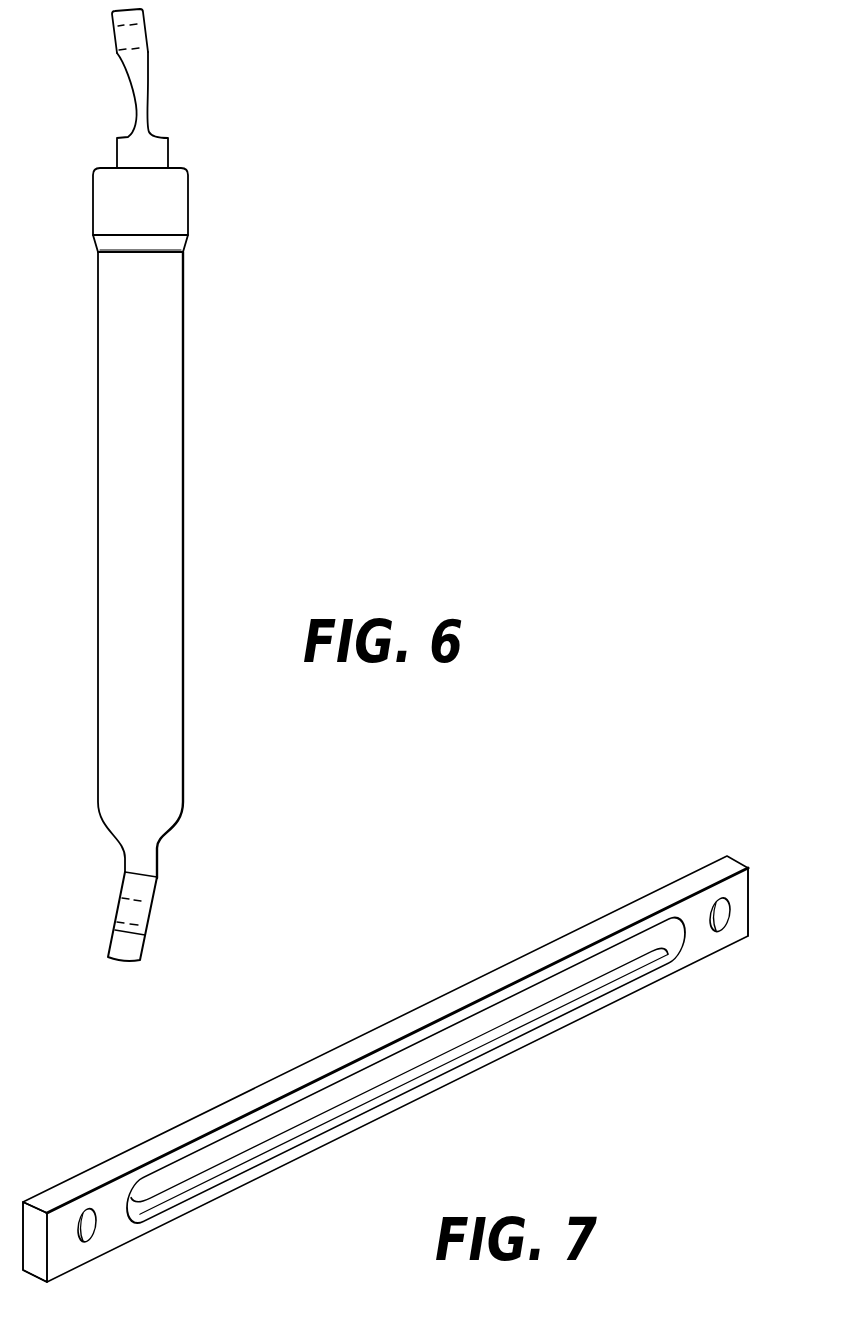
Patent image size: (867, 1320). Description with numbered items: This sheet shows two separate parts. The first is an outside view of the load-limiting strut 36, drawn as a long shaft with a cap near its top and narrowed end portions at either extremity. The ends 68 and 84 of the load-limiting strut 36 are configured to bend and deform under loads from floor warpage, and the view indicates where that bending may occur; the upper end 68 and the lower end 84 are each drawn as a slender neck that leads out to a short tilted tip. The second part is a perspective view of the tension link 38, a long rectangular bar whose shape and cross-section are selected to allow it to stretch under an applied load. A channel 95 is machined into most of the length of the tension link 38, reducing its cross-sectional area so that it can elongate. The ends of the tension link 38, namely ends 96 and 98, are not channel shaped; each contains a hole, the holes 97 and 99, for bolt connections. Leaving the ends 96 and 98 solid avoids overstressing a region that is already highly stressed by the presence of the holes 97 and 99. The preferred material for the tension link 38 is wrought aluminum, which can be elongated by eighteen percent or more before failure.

In FIG. 6, the load-limiting strut 36 is at (100, 305).
In FIG. 6, the end of load-limiting strut 68 is at (148, 87).
In FIG. 6, the end of load-limiting strut 84 is at (157, 887).
In FIG. 7, the tension link 38 is at (422, 1081).
In FIG. 7, the channel 95 is at (543, 1002).
In FIG. 7, the end of tension link 96 is at (695, 948).
In FIG. 7, the hole 97 is at (730, 913).
In FIG. 7, the end of tension link 98 is at (115, 1235).
In FIG. 7, the hole 99 is at (95, 1232).